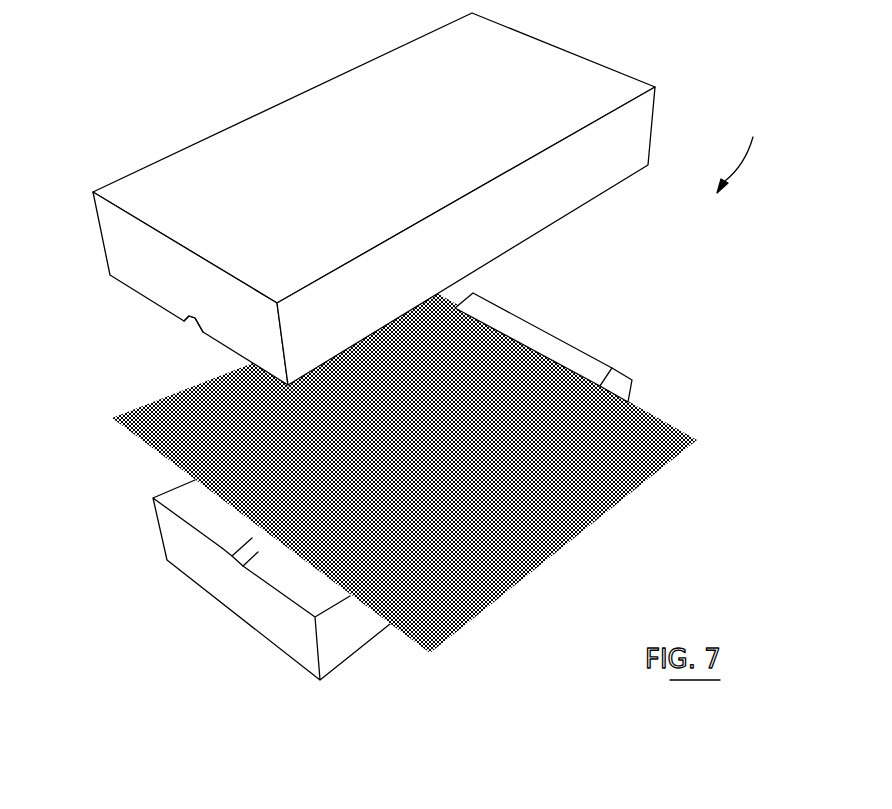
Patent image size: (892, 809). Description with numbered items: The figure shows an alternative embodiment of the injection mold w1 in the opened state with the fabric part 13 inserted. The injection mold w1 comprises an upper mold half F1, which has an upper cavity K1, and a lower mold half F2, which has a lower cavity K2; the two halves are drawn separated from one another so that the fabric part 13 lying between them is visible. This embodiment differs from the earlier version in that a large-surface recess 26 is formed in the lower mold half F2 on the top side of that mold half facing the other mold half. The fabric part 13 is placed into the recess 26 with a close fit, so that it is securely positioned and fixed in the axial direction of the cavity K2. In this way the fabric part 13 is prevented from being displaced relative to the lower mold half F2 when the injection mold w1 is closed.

The upper mold half F1 is at (323, 112).
The lower mold half F2 is at (535, 323).
The large-surface recess 26 is at (613, 367).
The fabric sheet 13 is at (670, 463).
The upper cavity K1 is at (192, 327).
The lower cavity K2 is at (227, 553).
The injection mold w1 is at (741, 145).